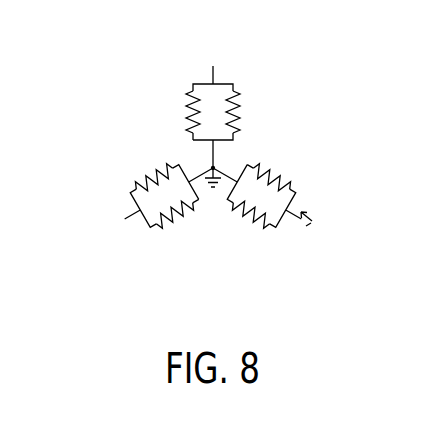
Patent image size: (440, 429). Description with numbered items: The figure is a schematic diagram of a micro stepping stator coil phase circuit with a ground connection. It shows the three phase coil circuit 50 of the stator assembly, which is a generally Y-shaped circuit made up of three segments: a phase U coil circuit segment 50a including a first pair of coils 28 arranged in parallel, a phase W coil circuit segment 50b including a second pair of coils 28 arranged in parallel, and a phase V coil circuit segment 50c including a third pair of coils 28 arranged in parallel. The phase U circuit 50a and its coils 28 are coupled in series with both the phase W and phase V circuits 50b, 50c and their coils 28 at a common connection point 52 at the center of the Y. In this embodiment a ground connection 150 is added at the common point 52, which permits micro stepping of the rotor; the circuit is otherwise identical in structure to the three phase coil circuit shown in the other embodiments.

The three phase coil circuit 50 is at (218, 149).
The phase U coil circuit segment 50a is at (214, 67).
The phase W coil circuit segment 50b is at (300, 224).
The phase V coil circuit segment 50c is at (123, 219).
The coils 28 is at (190, 100).
The common connection point 52 is at (215, 167).
The ground connection 150 is at (210, 191).